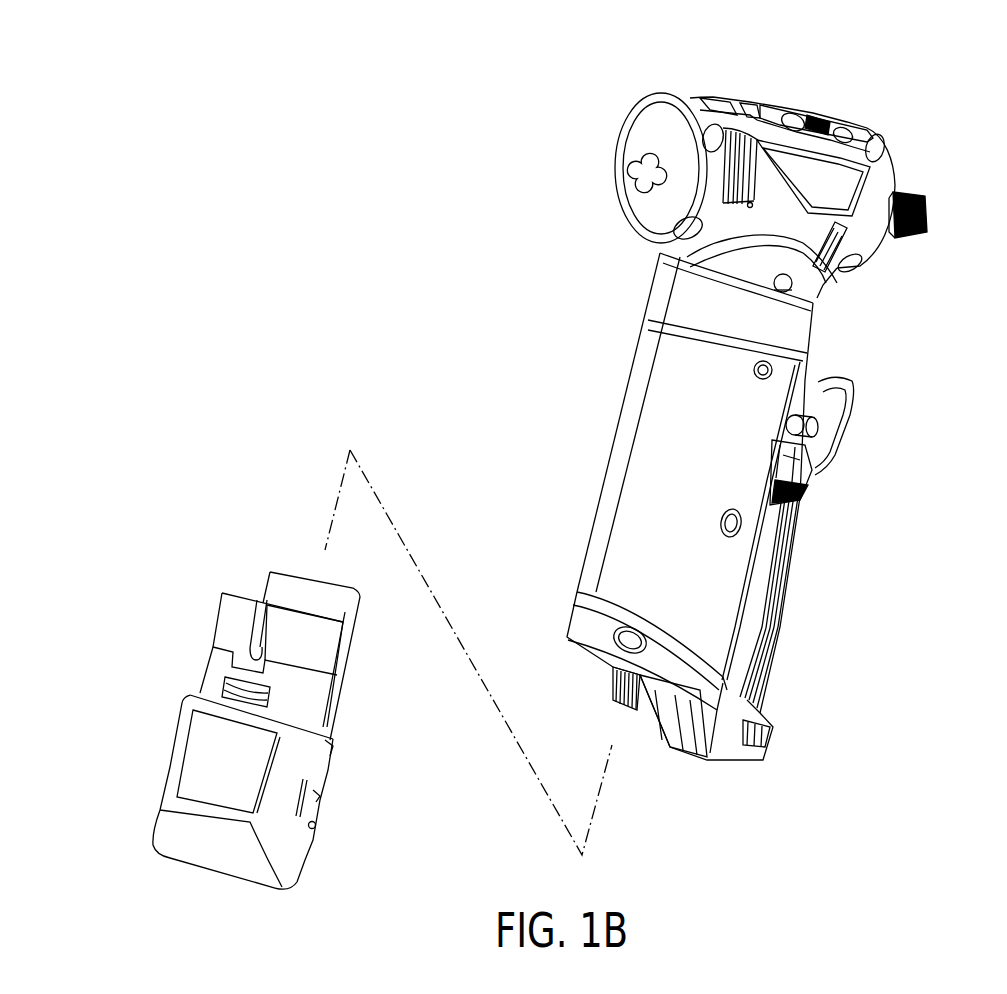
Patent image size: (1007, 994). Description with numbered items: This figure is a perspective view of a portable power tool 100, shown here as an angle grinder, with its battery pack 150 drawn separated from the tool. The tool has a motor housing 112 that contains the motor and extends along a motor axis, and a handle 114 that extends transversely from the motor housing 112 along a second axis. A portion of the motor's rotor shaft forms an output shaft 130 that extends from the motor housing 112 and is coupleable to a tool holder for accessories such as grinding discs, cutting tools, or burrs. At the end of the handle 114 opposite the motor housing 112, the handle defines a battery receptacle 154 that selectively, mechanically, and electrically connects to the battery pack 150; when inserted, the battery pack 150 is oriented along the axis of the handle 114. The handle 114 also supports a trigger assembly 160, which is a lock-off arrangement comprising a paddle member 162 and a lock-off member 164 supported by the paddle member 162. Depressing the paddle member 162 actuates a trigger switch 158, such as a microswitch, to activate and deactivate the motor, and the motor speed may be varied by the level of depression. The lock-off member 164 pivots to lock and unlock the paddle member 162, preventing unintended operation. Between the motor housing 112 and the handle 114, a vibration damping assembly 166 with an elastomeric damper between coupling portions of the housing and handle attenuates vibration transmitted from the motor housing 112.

The power tool 100 is at (920, 122).
The motor housing 112 is at (753, 100).
The handle 114 is at (630, 380).
The output shaft 130 is at (895, 240).
The battery pack 150 is at (154, 728).
The battery receptacle 154 is at (582, 685).
The trigger switch 158 is at (803, 385).
The trigger assembly 160 is at (886, 541).
The paddle member 162 is at (783, 533).
The lock-off member 164 is at (808, 457).
The vibration damping assembly 166 is at (658, 256).